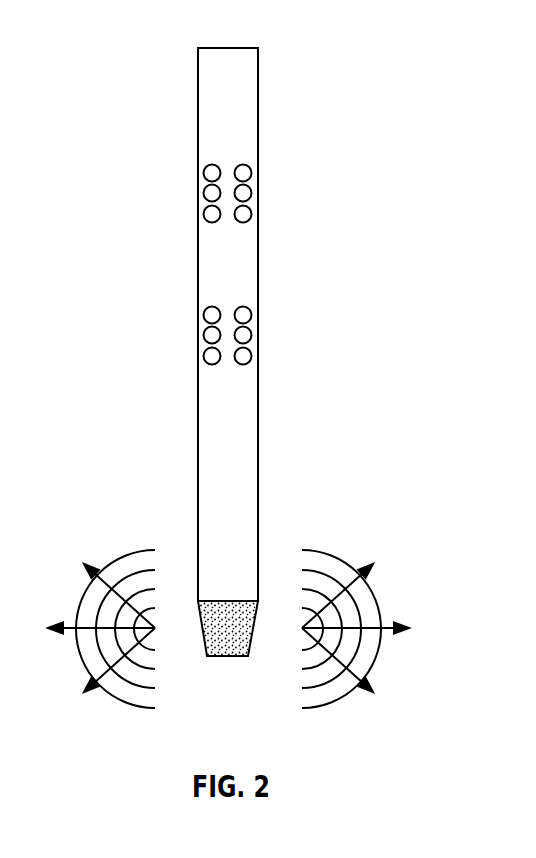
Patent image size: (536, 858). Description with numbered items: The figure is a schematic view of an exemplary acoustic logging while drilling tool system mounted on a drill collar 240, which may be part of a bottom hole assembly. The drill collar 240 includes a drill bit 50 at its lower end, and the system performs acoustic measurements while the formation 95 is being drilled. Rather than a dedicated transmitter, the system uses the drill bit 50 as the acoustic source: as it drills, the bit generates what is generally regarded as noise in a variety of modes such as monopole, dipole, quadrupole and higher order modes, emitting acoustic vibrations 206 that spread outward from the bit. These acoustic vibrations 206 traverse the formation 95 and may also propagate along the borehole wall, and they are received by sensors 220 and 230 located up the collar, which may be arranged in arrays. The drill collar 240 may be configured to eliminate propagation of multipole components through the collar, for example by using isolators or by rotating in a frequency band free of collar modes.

The drill collar 240 is at (320, 139).
The sensors 220 is at (138, 165).
The sensors 230 is at (138, 307).
The formation 95 is at (366, 310).
The drill bit 50 is at (227, 679).
The acoustic vibrations 206 is at (344, 552).